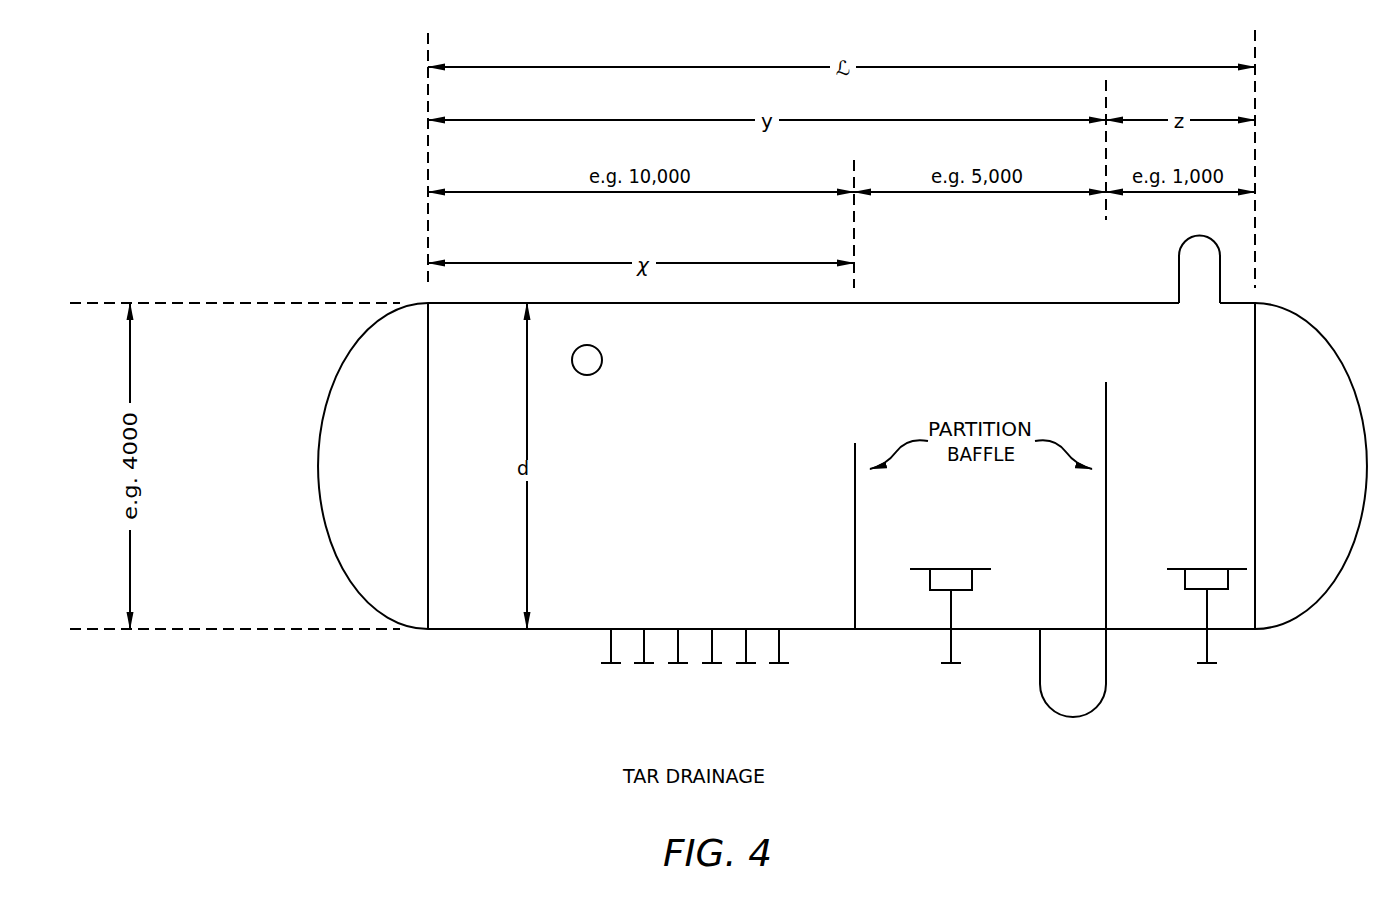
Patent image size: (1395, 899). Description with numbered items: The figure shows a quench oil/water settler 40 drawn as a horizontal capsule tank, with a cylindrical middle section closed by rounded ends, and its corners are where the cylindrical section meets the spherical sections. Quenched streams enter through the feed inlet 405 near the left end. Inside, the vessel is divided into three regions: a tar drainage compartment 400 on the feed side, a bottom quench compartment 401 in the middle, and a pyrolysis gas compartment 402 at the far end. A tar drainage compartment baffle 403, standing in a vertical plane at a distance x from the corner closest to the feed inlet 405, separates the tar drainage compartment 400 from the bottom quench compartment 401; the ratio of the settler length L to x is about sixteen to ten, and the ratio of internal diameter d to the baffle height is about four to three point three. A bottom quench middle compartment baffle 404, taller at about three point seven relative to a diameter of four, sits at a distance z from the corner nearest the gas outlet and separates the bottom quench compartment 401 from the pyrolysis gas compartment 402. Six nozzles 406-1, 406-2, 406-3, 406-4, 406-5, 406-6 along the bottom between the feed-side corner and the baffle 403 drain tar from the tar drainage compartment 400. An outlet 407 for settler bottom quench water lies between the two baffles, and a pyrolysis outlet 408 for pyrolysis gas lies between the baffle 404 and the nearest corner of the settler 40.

The quench oil/water settler 40 is at (262, 70).
The tar drainage compartment 400 is at (646, 530).
The bottom quench compartment 401 is at (990, 550).
The pyrolysis gas compartment 402 is at (1181, 497).
The tar drainage compartment baffle 403 is at (857, 605).
The bottom quench middle compartment baffle 404 is at (1106, 397).
The feed inlet 405 is at (601, 352).
The nozzle 406-1 is at (611, 667).
The nozzle 406-2 is at (644, 667).
The nozzle 406-3 is at (678, 667).
The nozzle 406-4 is at (712, 667).
The nozzle 406-5 is at (746, 667).
The nozzle 406-6 is at (779, 667).
The outlet 407 is at (953, 645).
The pyrolysis outlet 408 is at (1210, 644).